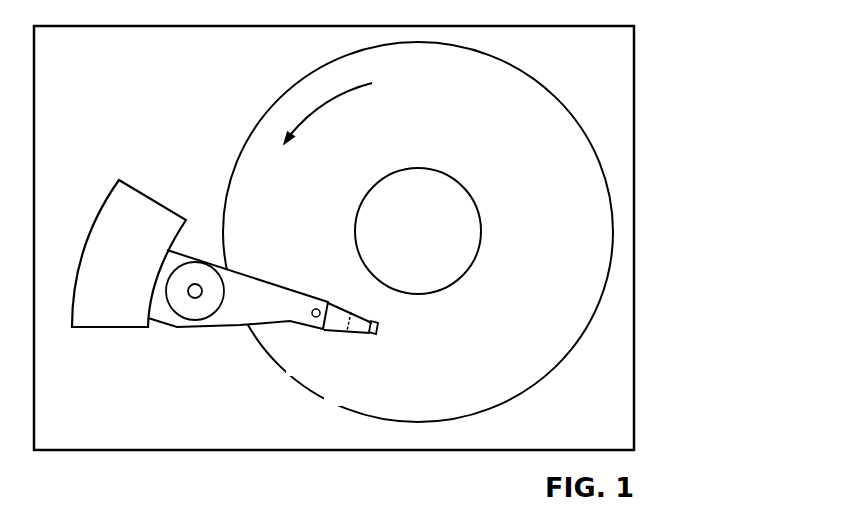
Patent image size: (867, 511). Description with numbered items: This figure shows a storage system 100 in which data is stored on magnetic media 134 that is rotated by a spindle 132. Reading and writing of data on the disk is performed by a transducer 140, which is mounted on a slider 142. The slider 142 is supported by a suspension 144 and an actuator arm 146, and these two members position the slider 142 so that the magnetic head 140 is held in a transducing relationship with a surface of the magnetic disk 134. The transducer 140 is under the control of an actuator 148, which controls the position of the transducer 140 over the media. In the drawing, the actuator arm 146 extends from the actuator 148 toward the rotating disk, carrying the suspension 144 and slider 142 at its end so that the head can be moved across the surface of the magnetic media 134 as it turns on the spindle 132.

The storage system 100 is at (656, 58).
The spindle 132 is at (454, 180).
The magnetic media 134 is at (558, 248).
The transducer 140 is at (380, 328).
The slider 142 is at (376, 322).
The suspension 144 is at (340, 330).
The actuator arm 146 is at (250, 273).
The actuator 148 is at (193, 292).